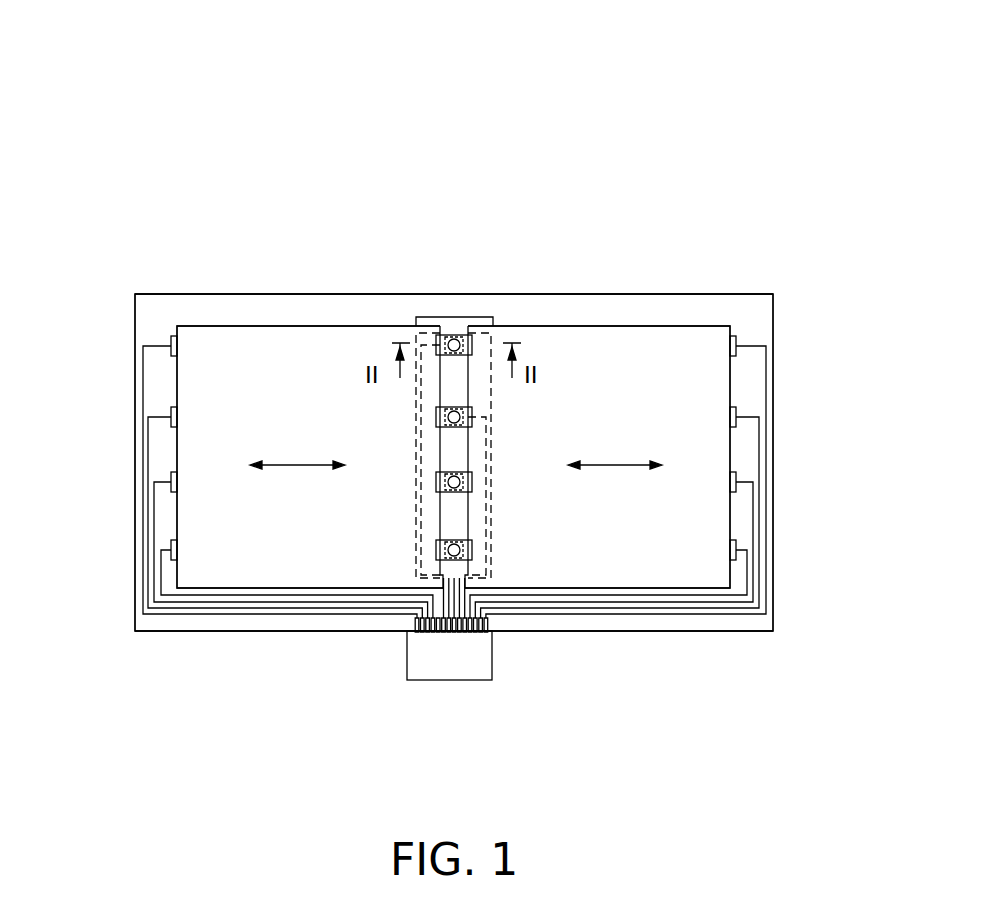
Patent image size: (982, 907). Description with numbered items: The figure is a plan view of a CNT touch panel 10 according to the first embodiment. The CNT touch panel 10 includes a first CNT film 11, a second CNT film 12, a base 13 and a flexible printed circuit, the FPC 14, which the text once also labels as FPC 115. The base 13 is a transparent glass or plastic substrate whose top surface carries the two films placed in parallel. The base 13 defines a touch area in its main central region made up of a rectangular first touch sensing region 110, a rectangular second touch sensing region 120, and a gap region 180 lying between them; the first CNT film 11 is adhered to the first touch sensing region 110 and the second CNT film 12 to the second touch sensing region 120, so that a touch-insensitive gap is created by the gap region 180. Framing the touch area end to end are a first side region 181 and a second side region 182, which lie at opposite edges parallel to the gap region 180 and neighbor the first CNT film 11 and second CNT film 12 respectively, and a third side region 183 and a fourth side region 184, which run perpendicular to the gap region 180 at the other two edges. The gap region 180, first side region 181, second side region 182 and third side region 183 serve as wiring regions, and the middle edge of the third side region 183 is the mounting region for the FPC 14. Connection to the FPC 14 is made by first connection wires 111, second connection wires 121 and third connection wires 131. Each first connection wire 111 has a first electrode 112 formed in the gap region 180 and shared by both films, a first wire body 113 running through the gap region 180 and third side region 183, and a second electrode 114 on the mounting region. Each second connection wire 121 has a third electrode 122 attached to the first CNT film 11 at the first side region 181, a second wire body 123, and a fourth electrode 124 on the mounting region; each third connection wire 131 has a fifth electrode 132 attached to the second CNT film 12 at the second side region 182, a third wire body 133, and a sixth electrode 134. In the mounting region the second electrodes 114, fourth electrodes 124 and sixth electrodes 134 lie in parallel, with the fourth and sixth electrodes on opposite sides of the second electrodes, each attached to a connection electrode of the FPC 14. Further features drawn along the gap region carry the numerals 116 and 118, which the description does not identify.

The CNT touch panel 10 is at (478, 51).
The first CNT film 11 is at (193, 325).
The second CNT film 12 is at (705, 325).
The base 13 is at (597, 292).
The flexible printed circuit (FPC) 14 is at (418, 657).
The first touch sensing region 110 is at (250, 343).
The first connection wires 111 is at (487, 550).
The first electrode 112 is at (470, 338).
The first wire body 113 is at (432, 342).
The second electrode 114 is at (455, 632).
The FPC 115 is at (430, 317).
The shaft hole 116 is at (455, 340).
The bearing 118 is at (437, 512).
The second touch sensing region 120 is at (647, 337).
The second connection wires 121 is at (149, 438).
The third electrode 122 is at (173, 341).
The second wire body 123 is at (158, 343).
The fourth electrode 124 is at (392, 622).
The third connection wires 131 is at (760, 440).
The fifth electrode 132 is at (737, 338).
The third wire body 133 is at (765, 370).
The sixth electrode 134 is at (490, 628).
The gap region 180 is at (457, 385).
The first side region 181 is at (165, 523).
The second side region 182 is at (738, 520).
The third side region 183 is at (690, 625).
The fourth side region 184 is at (305, 312).